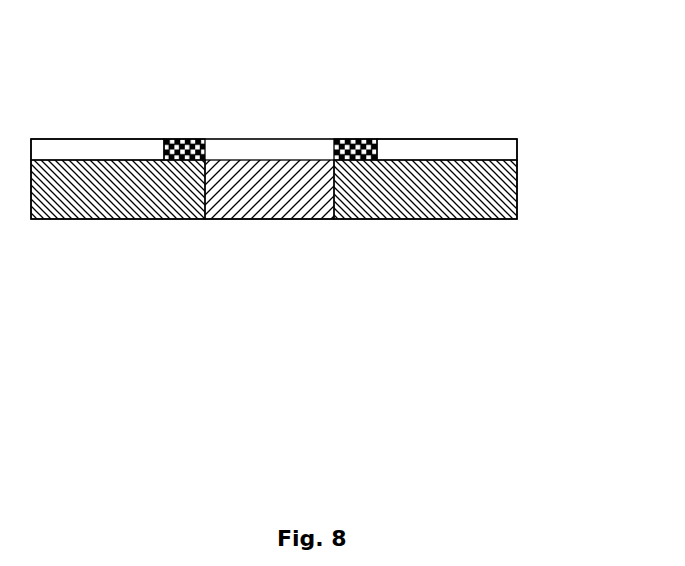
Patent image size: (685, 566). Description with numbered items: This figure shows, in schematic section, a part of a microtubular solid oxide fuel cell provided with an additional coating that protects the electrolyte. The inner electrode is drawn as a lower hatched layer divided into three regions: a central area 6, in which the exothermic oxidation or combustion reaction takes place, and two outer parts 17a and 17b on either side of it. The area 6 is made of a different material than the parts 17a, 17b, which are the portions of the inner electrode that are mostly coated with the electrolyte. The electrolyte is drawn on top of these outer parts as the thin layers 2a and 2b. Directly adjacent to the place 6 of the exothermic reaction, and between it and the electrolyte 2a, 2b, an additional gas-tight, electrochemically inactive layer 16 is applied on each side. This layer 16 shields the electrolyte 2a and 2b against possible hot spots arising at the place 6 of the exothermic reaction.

The electrolyte 2a is at (438, 139).
The electrolyte 2b is at (92, 139).
The gas-tight, electrochemically inactive layer 16 is at (340, 139).
The part of the inner electrode 17a is at (518, 185).
The part of the inner electrode 17b is at (65, 221).
The area of the exothermic reaction 6 is at (286, 221).